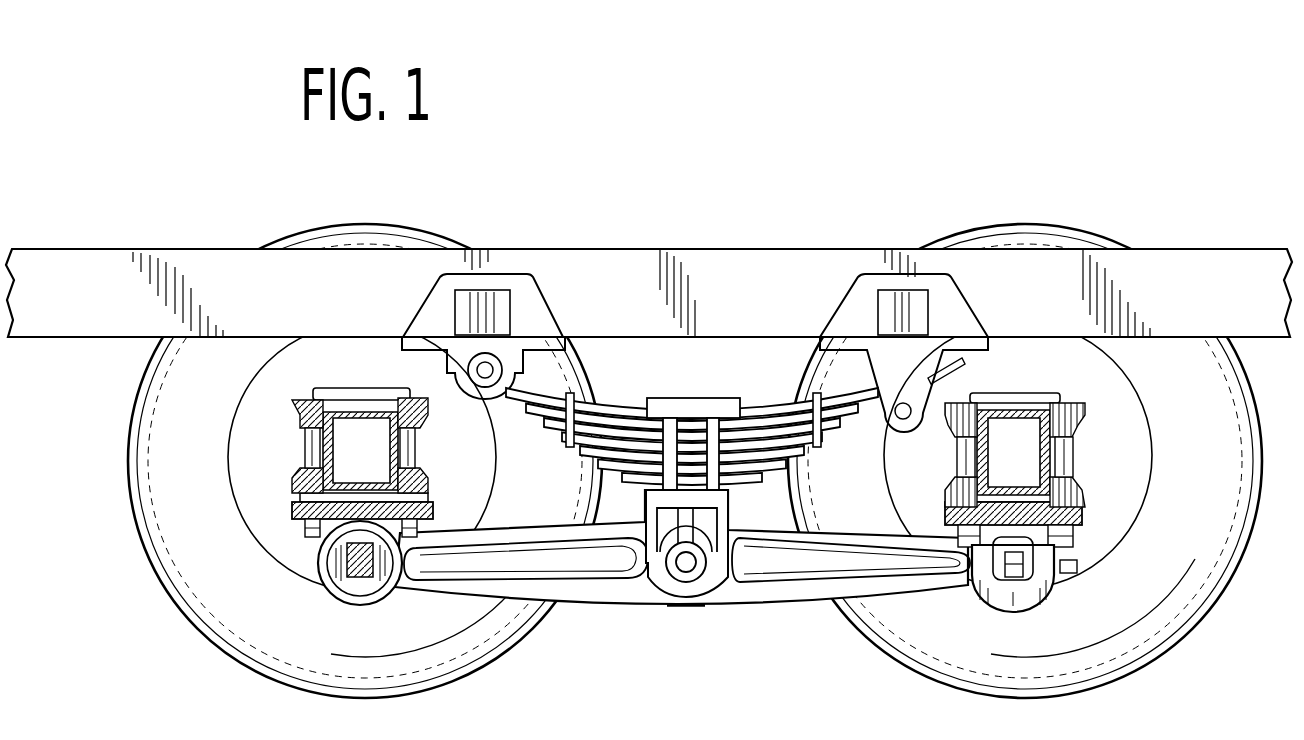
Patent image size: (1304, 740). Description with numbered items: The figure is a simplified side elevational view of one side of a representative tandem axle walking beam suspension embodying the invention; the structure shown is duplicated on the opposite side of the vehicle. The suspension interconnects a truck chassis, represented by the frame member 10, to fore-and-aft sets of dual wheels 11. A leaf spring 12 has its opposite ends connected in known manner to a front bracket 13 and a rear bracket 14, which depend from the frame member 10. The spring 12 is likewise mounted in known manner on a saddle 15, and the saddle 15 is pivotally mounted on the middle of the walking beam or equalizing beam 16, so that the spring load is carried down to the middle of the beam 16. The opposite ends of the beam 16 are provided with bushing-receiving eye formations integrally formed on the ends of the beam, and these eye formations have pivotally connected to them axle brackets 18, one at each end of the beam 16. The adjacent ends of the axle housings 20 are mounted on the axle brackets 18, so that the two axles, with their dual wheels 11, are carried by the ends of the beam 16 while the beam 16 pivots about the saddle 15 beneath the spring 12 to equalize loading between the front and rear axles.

The frame member 10 is at (703, 248).
The dual wheels 11 is at (130, 462).
The leaf spring 12 is at (770, 397).
The front bracket 13 is at (551, 305).
The rear bracket 14 is at (843, 314).
The saddle 15 is at (728, 516).
The walking beam 16 is at (768, 602).
The axle bracket 18 is at (433, 506).
The axle housing 20 is at (333, 449).